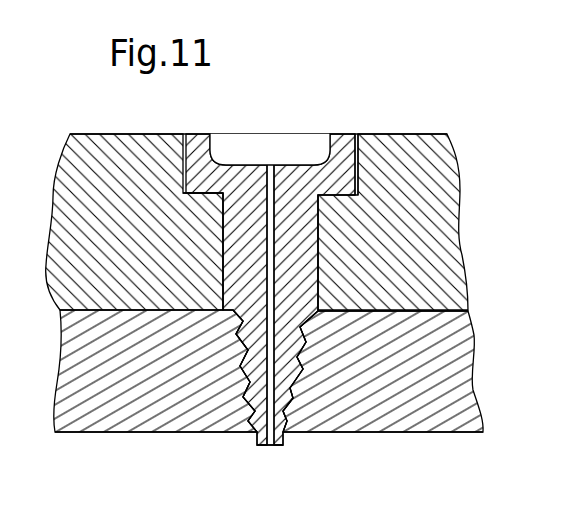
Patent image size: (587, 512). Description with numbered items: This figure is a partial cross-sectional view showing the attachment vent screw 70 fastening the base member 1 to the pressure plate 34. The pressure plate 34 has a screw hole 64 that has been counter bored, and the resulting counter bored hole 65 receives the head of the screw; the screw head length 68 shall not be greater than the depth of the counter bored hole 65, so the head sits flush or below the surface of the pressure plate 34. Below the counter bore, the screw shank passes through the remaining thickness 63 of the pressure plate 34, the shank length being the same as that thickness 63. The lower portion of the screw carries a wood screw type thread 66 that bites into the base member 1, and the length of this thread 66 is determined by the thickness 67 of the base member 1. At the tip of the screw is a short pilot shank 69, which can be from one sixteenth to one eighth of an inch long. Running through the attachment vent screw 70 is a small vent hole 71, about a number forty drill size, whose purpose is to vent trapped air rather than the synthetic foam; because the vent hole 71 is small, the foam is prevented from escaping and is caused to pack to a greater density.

The base member 1 is at (120, 407).
The pressure plate 34 is at (132, 150).
The thickness of the pressure plate 63 is at (203, 195).
The screw hole 64 is at (330, 225).
The counter bored hole 65 is at (207, 191).
The thread 66 is at (288, 402).
The thickness of the base member 67 is at (387, 312).
The screw head length 68 is at (359, 168).
The pilot shank 69 is at (254, 441).
The attachment vent screw 70 is at (268, 132).
The vent hole 71 is at (267, 447).